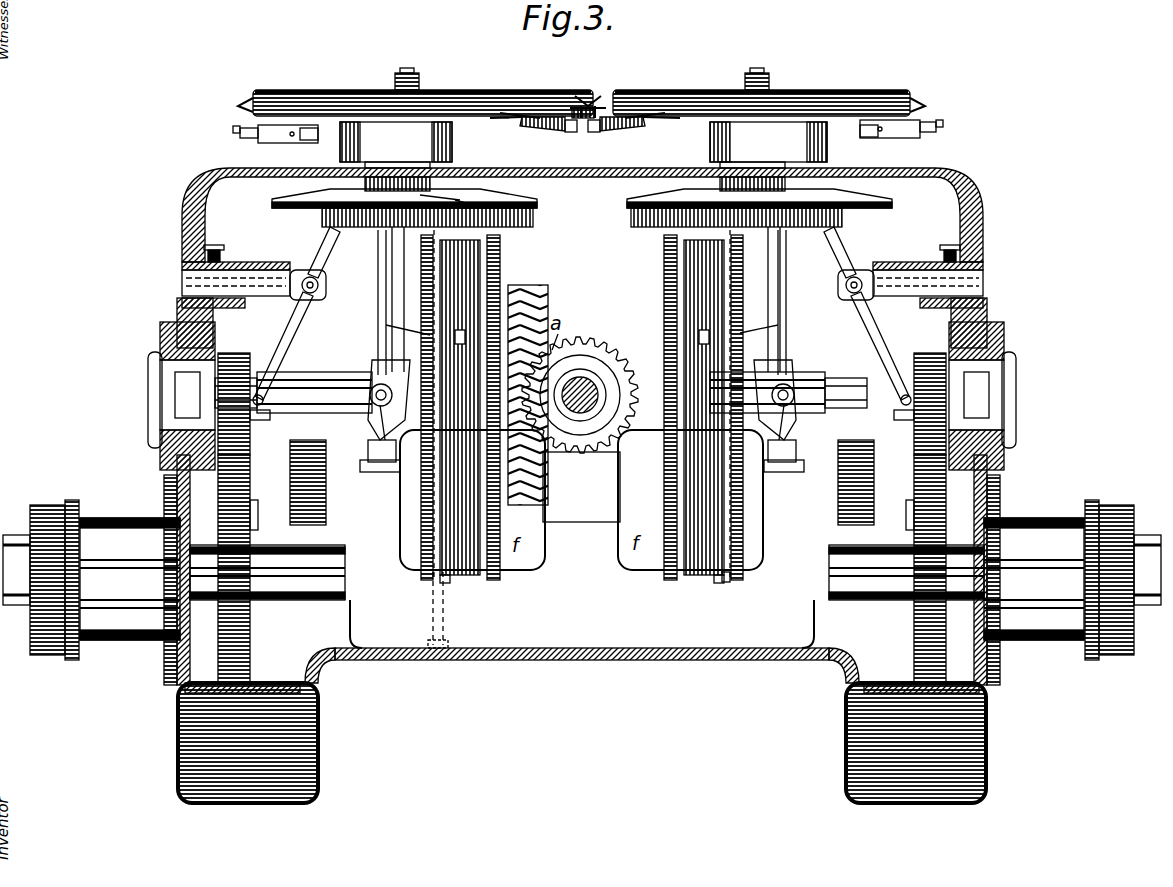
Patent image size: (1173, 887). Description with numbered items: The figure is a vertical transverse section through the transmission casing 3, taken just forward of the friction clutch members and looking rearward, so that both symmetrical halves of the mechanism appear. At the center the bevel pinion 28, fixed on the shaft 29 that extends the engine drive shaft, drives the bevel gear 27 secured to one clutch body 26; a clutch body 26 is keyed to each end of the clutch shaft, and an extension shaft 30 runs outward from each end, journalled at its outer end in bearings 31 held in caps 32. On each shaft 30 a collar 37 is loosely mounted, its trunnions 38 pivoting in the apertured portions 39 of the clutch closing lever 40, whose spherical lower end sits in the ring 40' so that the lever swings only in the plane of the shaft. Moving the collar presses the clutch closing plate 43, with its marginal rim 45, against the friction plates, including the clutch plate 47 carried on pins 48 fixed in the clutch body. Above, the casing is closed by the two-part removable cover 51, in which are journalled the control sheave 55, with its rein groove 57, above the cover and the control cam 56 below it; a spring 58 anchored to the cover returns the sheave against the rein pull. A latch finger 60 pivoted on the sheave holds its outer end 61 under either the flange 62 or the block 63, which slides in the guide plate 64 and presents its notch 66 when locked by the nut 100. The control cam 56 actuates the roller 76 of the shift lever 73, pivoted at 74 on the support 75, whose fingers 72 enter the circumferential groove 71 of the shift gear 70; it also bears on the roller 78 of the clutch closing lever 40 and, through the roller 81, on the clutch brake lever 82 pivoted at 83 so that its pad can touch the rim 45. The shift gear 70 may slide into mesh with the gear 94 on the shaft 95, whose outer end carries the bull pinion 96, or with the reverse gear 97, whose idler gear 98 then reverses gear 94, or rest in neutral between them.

The casing 3 is at (606, 660).
The clutch body 26 is at (502, 272).
The bevel gear 27 is at (538, 296).
The bevel pinion 28 is at (585, 338).
The shaft 29 is at (582, 414).
The extension shaft 30 is at (322, 372).
The bearings 31 is at (160, 436).
The caps 32 is at (150, 414).
The collar 37 is at (583, 392).
The trunnions 38 is at (370, 425).
The apertured portions 39 is at (368, 452).
The clutch closing lever 40 is at (582, 302).
The ring 40' is at (582, 478).
The clutch closing plate 43 is at (386, 330).
The marginal rim 45 is at (420, 500).
The clutch plate 47 is at (448, 576).
The pins 48 is at (500, 248).
The removable cover 51 is at (232, 172).
The control sheave 55 is at (465, 98).
The control cam 56 is at (505, 205).
The groove 57 is at (310, 102).
The spring 58 is at (583, 145).
The latch finger 60 is at (298, 143).
The outer end 61 is at (240, 134).
The flange 62 is at (538, 130).
The block 63 is at (570, 132).
The guide plate 64 is at (598, 104).
The notch 66 is at (596, 132).
The shift gear 70 is at (234, 353).
The circumferential groove 71 is at (262, 420).
The fingers 72 is at (258, 394).
The shift lever 73 is at (296, 322).
The pivot 74 is at (326, 282).
The support 75 is at (248, 280).
The spherical roller 76 is at (338, 238).
The roller 78 is at (398, 236).
The roller 81 is at (462, 188).
The clutch brake lever 82 is at (470, 200).
The pivot 83 is at (450, 642).
The gear 94 is at (250, 636).
The shaft 95 is at (587, 572).
The bull pinion 96 is at (42, 500).
The reverse gear 97 is at (290, 500).
The idler gear 98 is at (252, 515).
The nut 100 is at (579, 100).